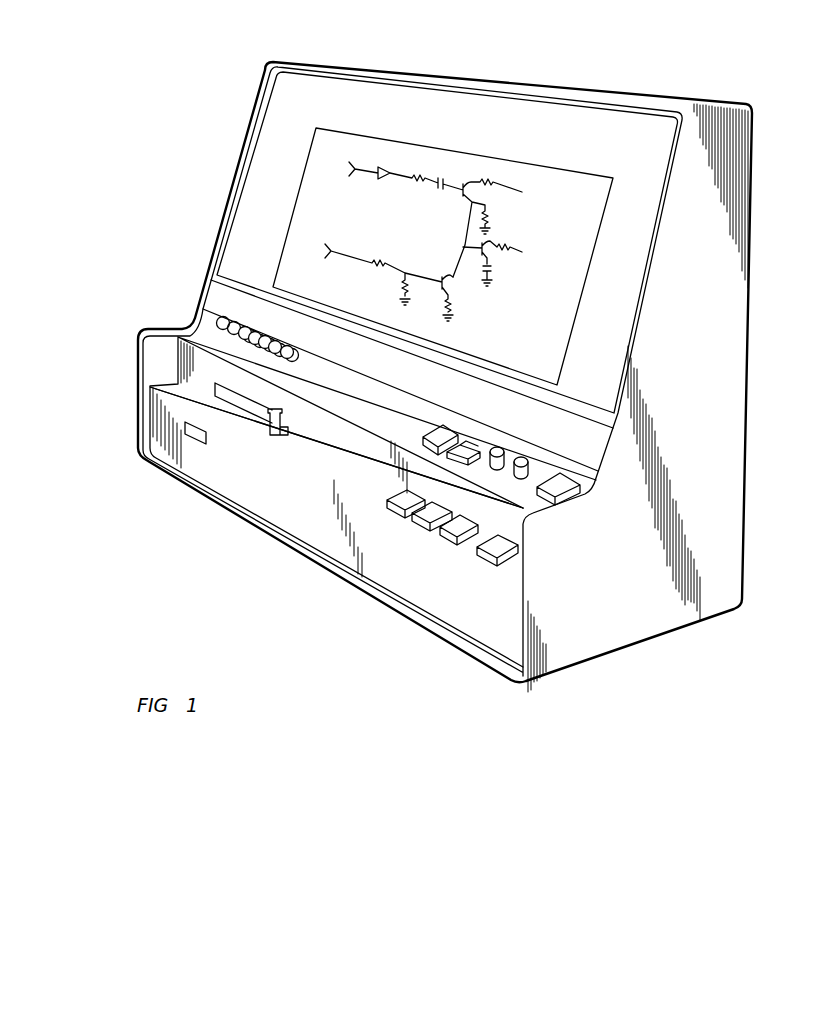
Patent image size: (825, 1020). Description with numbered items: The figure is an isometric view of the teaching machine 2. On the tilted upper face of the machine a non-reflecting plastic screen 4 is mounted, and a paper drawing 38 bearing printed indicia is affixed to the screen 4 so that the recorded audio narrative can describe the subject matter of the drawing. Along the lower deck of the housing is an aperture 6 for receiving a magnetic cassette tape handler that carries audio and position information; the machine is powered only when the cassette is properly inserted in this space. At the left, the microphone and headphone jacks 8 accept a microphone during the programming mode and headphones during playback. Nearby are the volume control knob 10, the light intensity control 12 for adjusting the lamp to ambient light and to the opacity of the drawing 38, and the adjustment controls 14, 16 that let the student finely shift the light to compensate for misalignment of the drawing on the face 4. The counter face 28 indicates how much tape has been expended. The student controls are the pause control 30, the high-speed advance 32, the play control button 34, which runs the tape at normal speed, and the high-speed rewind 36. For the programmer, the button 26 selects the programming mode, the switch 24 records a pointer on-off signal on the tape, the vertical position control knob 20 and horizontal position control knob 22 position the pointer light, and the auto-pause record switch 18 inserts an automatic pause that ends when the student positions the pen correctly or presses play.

The teaching machine 2 is at (484, 56).
The non-reflecting plastic screen 4 is at (270, 184).
The paper drawing 38 is at (304, 218).
The microphone and headphone jacks 8 is at (198, 318).
The volume control knob 10 is at (294, 352).
The light intensity control 12 is at (300, 360).
The adjustment control 14 is at (330, 365).
The adjustment control 16 is at (360, 372).
The aperture 6 is at (310, 395).
The counter face 28 is at (193, 434).
The programming mode button 26 is at (425, 440).
The pointer light switch 24 is at (450, 452).
The high-speed rewind control 36 is at (388, 510).
The play control button 34 is at (416, 522).
The high-speed advance control 32 is at (441, 536).
The pause control 30 is at (478, 556).
The horizontal position control knob 22 is at (497, 470).
The vertical position control knob 20 is at (523, 476).
The auto-pause record switch 18 is at (563, 498).